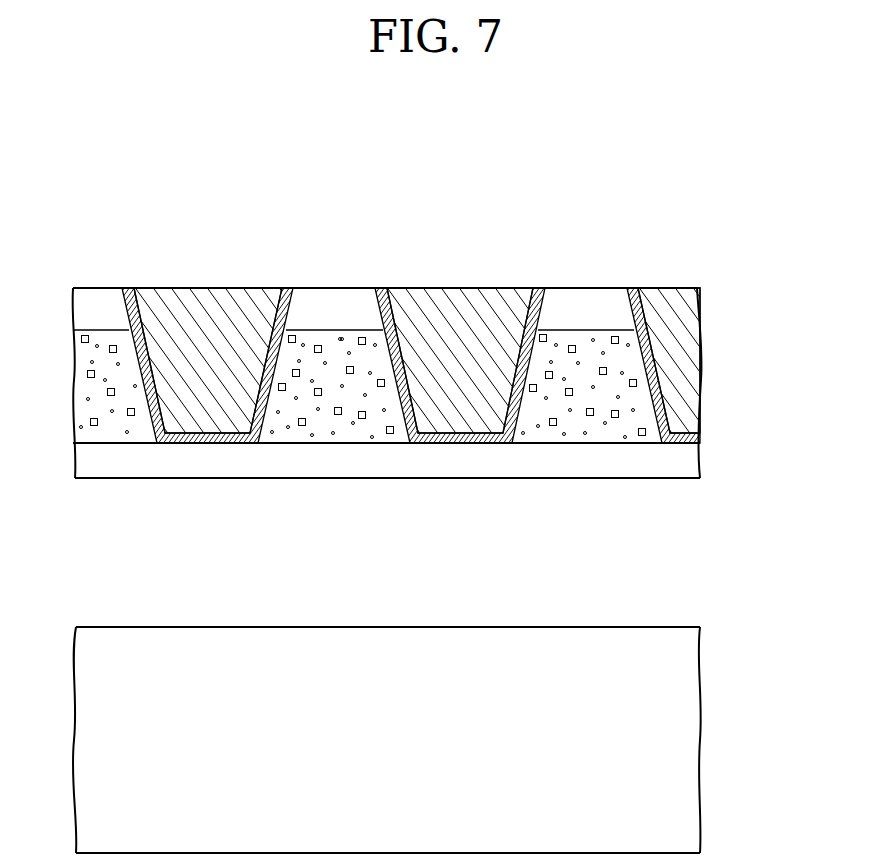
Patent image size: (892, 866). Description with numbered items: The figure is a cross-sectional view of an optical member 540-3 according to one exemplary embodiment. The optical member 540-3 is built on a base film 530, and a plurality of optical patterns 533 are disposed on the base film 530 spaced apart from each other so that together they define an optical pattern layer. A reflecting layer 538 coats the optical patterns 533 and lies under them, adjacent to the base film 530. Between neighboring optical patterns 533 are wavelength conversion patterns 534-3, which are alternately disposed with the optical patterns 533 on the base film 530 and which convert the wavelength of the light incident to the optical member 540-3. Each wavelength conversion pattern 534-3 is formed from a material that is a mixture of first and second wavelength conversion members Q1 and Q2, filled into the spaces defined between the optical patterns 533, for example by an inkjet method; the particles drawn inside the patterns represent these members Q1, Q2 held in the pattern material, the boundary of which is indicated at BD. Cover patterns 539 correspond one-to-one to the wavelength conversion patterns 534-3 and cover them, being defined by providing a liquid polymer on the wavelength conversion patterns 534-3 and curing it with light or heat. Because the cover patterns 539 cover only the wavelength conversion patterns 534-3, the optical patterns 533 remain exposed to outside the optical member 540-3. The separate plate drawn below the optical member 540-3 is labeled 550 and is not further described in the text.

The base film 530 is at (690, 462).
The optical pattern 533 is at (690, 368).
The wavelength conversion pattern 534-3 is at (363, 313).
The reflecting layer 538 is at (696, 441).
The cover pattern 539 is at (588, 302).
The optical member 540-3 is at (465, 333).
The display panel 550 is at (688, 740).
The first wavelength conversion member Q1 is at (318, 345).
The second wavelength conversion member Q2 is at (340, 337).
The binder BD is at (372, 358).